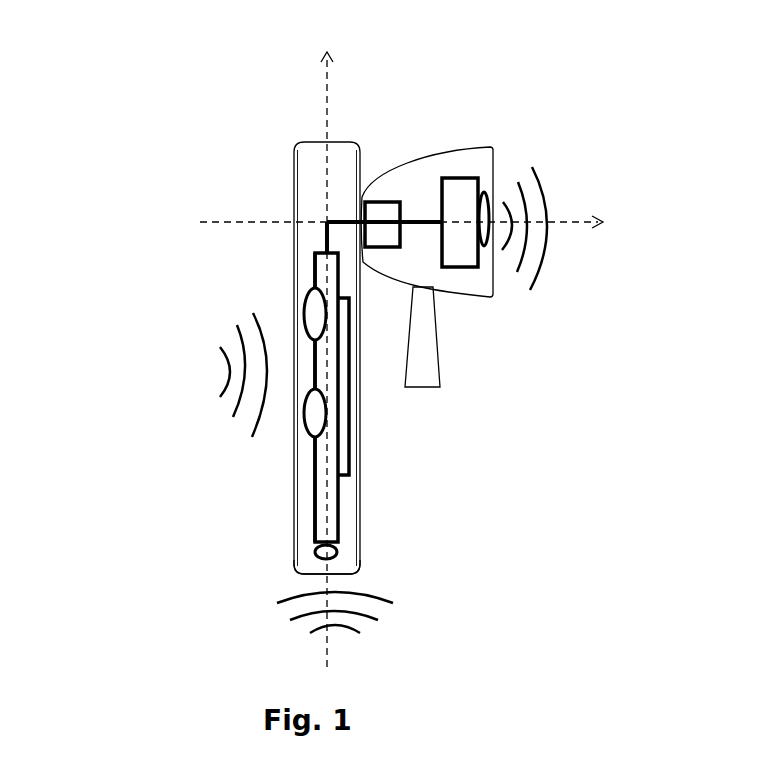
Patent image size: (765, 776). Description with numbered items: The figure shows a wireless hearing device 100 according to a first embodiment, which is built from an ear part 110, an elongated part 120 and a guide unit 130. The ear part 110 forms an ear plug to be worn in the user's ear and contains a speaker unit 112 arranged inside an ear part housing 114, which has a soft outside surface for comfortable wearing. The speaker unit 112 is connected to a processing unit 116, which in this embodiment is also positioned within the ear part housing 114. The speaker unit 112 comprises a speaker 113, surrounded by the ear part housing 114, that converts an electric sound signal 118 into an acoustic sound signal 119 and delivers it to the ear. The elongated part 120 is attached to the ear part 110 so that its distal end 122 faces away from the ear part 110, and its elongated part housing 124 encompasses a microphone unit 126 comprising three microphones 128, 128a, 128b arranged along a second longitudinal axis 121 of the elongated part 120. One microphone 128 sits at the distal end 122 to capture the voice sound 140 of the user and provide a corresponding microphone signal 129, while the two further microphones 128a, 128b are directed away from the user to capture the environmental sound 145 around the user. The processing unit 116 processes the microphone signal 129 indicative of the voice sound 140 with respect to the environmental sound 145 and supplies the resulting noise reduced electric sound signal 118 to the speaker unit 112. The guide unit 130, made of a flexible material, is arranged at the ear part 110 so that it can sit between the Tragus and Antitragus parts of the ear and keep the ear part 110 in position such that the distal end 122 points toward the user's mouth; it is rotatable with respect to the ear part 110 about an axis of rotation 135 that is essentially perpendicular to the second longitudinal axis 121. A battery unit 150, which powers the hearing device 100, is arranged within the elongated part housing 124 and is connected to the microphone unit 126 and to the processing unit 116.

The wireless hearing device 100 is at (225, 116).
The ear part 110 is at (490, 157).
The speaker unit 112 is at (463, 177).
The speaker 113 is at (503, 203).
The ear part housing 114 is at (403, 198).
The processing unit 116 is at (362, 190).
The electric sound signal 118 is at (453, 296).
The acoustic sound signal 119 is at (547, 238).
The elongated part 120 is at (303, 182).
The second longitudinal axis 121 is at (327, 167).
The distal end 122 is at (305, 548).
The elongated part housing 124 is at (300, 262).
The microphone unit 126 is at (313, 278).
The microphone 128 is at (337, 550).
The microphone 128a is at (307, 435).
The microphone 128b is at (307, 322).
The microphone signal 129 is at (322, 243).
The guide unit 130 is at (438, 327).
The axis of rotation 135 is at (240, 223).
The voice sound 140 is at (393, 600).
The environmental sound 145 is at (232, 413).
The battery unit 150 is at (353, 455).